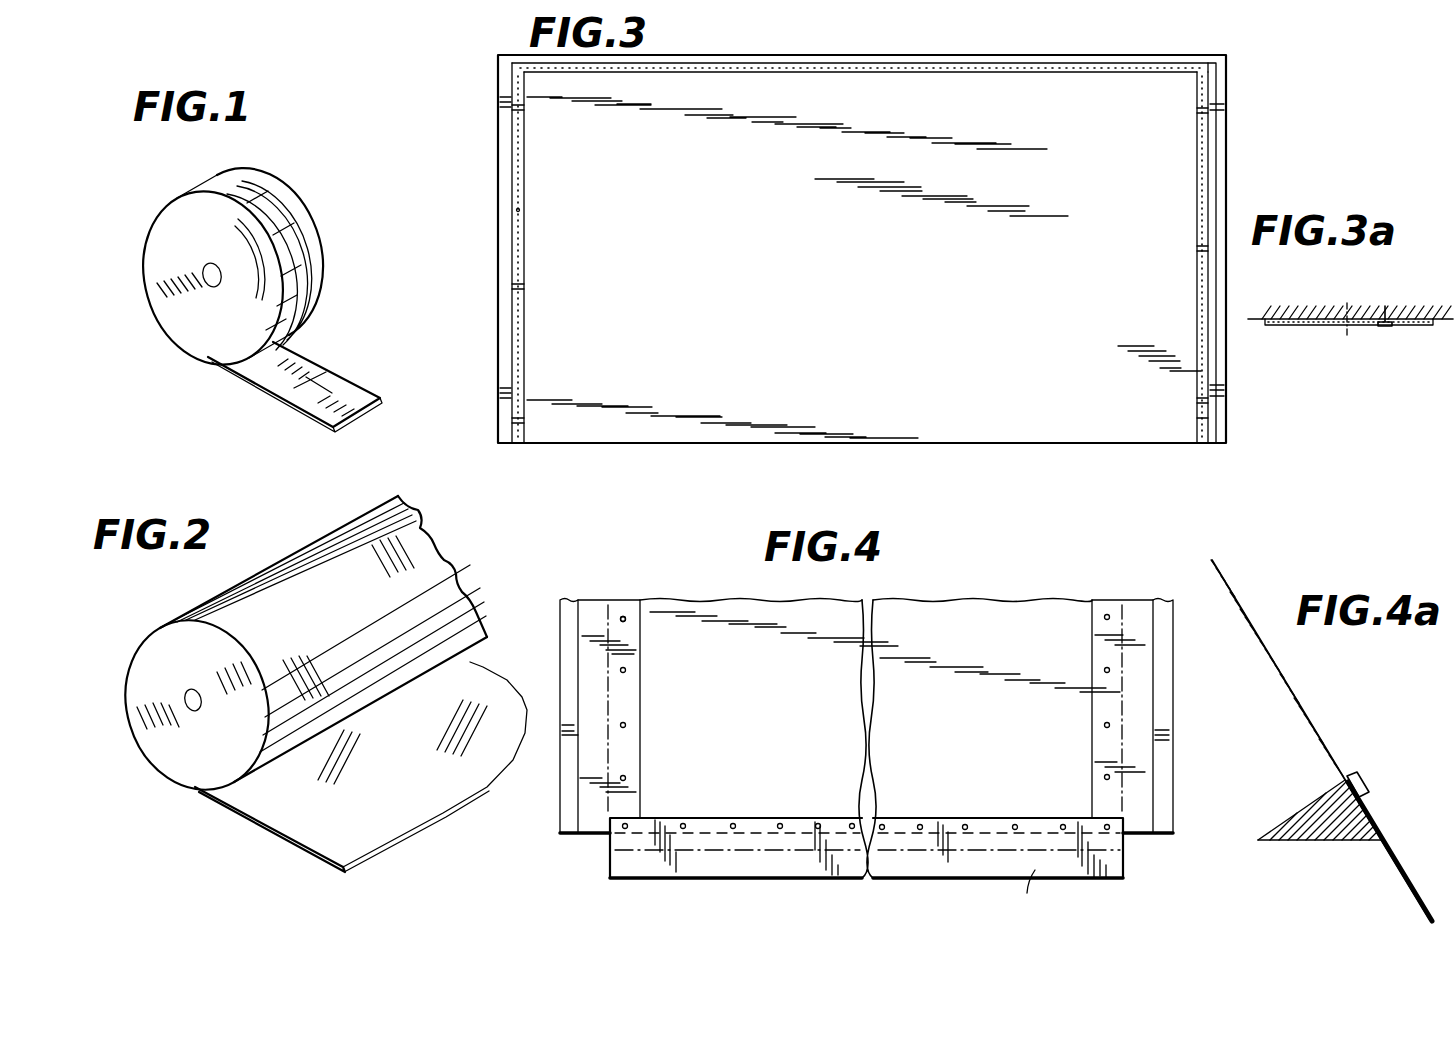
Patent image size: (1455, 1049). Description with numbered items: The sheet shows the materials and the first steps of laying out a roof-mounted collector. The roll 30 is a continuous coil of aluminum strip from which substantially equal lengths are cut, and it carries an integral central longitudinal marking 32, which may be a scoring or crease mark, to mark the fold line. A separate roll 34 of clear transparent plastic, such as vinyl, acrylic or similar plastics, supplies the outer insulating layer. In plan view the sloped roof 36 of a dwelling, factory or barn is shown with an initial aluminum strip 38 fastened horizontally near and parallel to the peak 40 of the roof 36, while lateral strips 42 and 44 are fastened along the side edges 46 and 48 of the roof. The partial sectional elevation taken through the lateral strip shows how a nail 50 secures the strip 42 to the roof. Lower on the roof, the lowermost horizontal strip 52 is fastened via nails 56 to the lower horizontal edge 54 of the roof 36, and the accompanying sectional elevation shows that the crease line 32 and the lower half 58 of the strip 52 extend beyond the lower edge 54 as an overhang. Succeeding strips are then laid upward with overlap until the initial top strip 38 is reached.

In FIG. 1, the roll of aluminum strip 30 is at (180, 315).
In FIG. 1, the central longitudinal marking 32 is at (283, 387).
In FIG. 3, the central longitudinal marking 32 is at (755, 70).
In FIG. 3A, the central longitudinal marking 32 is at (1348, 328).
In FIG. 4, the central longitudinal marking 32 is at (922, 850).
In FIG. 4A, the central longitudinal marking 32 is at (1387, 853).
In FIG. 2, the roll of clear transparent plastic 34 is at (165, 738).
In FIG. 3, the sloped roof 36 is at (503, 345).
In FIG. 3A, the sloped roof 36 is at (1425, 313).
In FIG. 4, the sloped roof 36 is at (560, 798).
In FIG. 4A, the sloped roof 36 is at (1283, 682).
In FIG. 3, the initial aluminum strip 38 is at (878, 77).
In FIG. 3, the peak 40 is at (856, 235).
In FIG. 3, the lateral strip 42 is at (524, 275).
In FIG. 3A, the lateral strip 42 is at (1292, 326).
In FIG. 4, the lateral strip 42 is at (588, 610).
In FIG. 3, the lateral strip 44 is at (1197, 166).
In FIG. 4, the lateral strip 44 is at (1143, 750).
In FIG. 3, the side edge 46 is at (503, 292).
In FIG. 3, the side edge 48 is at (1227, 172).
In FIG. 3, the nail 50 is at (519, 212).
In FIG. 3A, the nail 50 is at (1388, 328).
In FIG. 4, the nail 50 is at (626, 621).
In FIG. 4, the lowermost horizontal strip 52 is at (865, 858).
In FIG. 4A, the lowermost horizontal strip 52 is at (1390, 841).
In FIG. 4, the lower horizontal edge 54 is at (572, 837).
In FIG. 4A, the lower horizontal edge 54 is at (1347, 837).
In FIG. 4, the nails 56 is at (710, 808).
In FIG. 4A, the nails 56 is at (1360, 795).
In FIG. 4, the lower half of the strip 58 is at (1045, 893).
In FIG. 4A, the lower half of the strip 58 is at (1408, 887).